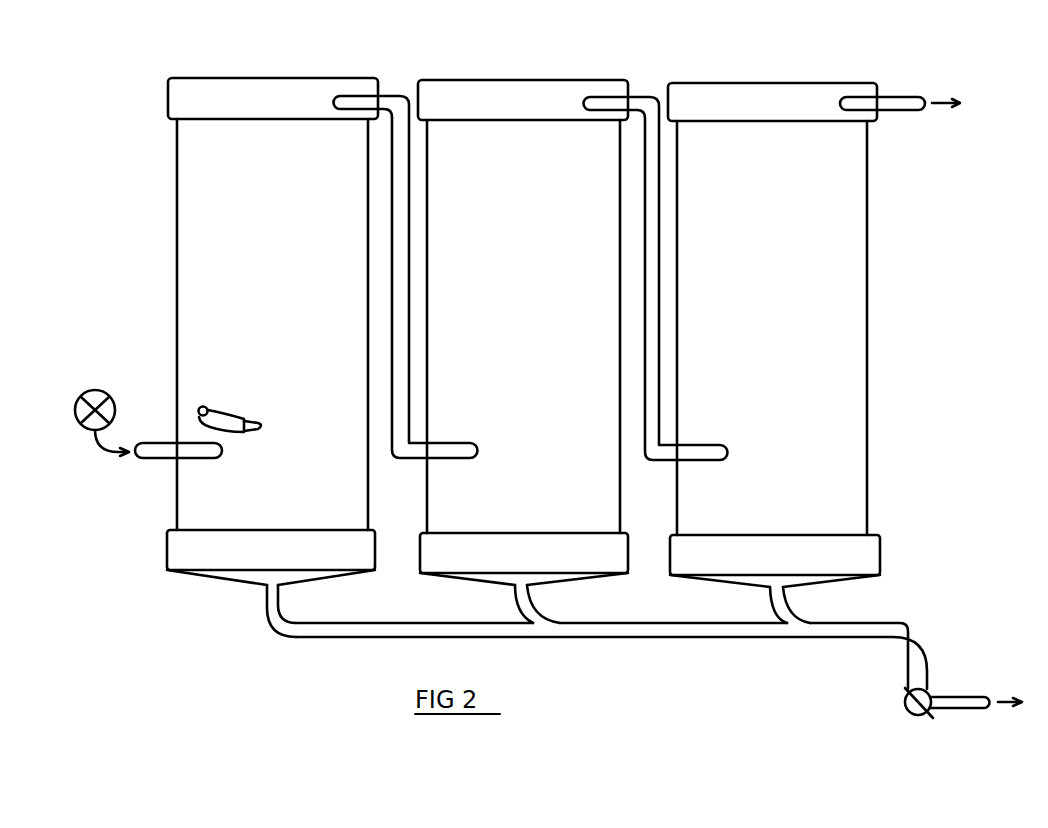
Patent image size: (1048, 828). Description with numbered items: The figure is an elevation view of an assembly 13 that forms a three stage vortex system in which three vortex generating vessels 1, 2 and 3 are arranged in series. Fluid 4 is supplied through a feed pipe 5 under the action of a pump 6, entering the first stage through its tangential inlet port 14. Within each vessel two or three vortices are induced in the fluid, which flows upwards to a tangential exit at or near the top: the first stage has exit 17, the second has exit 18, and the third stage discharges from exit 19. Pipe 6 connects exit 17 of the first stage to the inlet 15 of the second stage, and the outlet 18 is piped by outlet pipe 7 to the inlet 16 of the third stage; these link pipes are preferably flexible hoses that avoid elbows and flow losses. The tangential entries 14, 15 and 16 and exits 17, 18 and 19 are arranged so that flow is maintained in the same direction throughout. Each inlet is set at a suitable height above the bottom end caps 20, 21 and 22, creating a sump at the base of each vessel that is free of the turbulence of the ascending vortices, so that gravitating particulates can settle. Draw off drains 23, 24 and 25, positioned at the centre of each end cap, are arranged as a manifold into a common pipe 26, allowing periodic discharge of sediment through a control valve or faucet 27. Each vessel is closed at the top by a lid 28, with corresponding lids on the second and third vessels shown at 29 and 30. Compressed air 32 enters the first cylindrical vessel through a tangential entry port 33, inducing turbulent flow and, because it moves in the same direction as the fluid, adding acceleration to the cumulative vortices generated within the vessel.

The vortex generating vessel 1 is at (176, 497).
The vortex generating vessel 2 is at (427, 494).
The vortex generating vessel 3 is at (677, 497).
The fluid 4 is at (93, 456).
The feed pipe 5 is at (156, 440).
The pump 6 is at (412, 256).
The outlet pipe 7 is at (660, 250).
The assembly 13 is at (355, 712).
The inlet port 14 is at (232, 452).
The inlet port 15 is at (488, 456).
The inlet port 16 is at (733, 457).
The tangential exit 17 is at (276, 272).
The tangential exit 18 is at (623, 274).
The tangential exit 19 is at (838, 102).
The bottom end cap 20 is at (258, 533).
The bottom end cap 21 is at (506, 546).
The bottom end cap 22 is at (760, 553).
The draw off drain 23 is at (265, 592).
The draw off drain 24 is at (512, 590).
The draw off drain 25 is at (768, 590).
The common pipe 26 is at (633, 641).
The control valve 27 is at (935, 690).
The top lid 28 is at (270, 74).
The top of second vessel 29 is at (528, 78).
The top of third vessel 30 is at (762, 80).
The compressed air 32 is at (196, 403).
The tangential entry port 33 is at (264, 420).